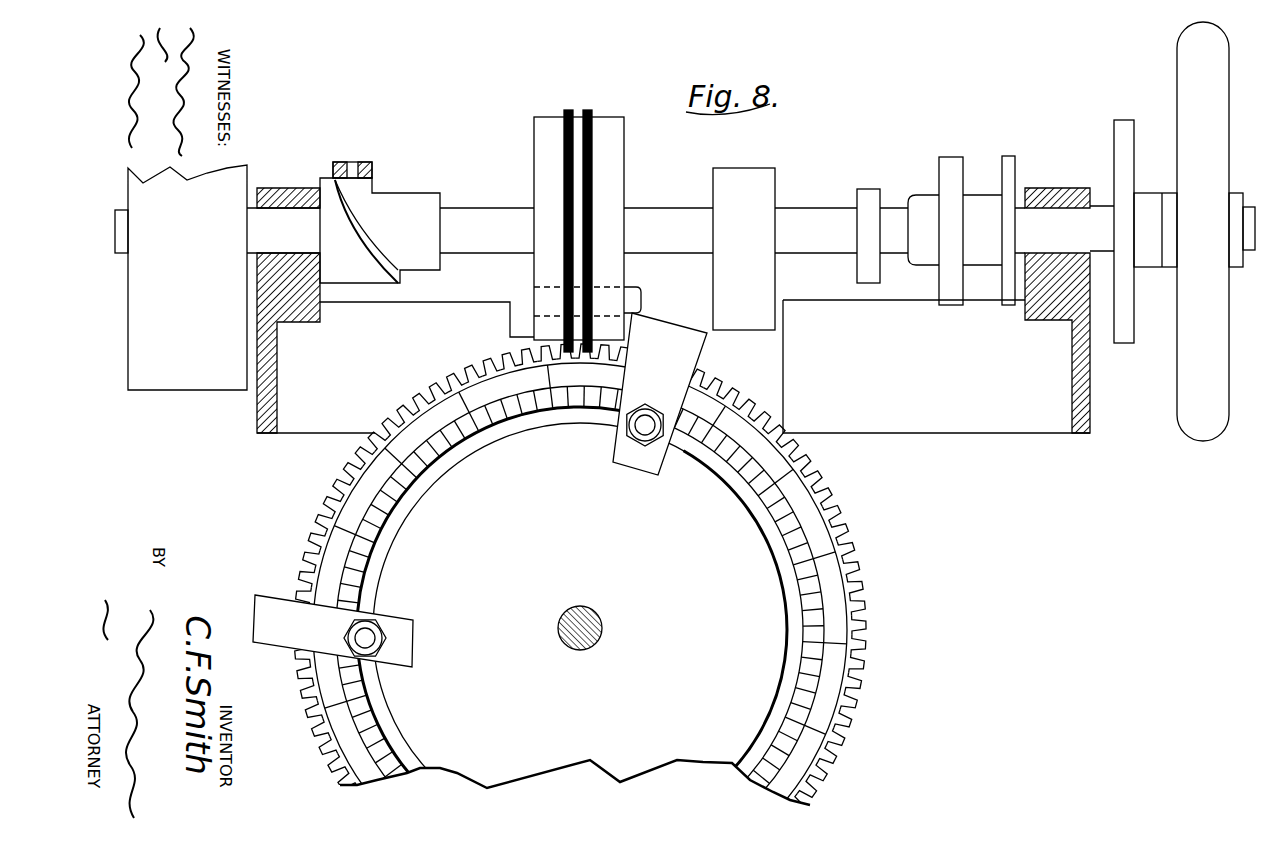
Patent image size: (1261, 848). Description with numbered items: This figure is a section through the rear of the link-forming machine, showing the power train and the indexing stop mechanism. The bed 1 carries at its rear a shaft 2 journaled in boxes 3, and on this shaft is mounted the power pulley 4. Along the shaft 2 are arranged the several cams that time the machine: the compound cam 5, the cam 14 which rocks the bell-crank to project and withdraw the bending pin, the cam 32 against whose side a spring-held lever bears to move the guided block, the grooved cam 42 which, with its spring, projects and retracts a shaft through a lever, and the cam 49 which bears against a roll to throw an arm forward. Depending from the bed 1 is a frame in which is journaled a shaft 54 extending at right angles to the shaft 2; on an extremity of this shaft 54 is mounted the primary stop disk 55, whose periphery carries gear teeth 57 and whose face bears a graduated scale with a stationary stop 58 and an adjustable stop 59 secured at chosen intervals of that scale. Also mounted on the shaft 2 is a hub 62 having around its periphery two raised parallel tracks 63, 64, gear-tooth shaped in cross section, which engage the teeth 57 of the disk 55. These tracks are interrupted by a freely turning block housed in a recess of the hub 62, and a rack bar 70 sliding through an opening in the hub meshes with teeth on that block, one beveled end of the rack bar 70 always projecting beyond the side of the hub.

The bed 1 is at (673, 366).
The shaft 2 is at (482, 214).
The boxes 3 is at (296, 197).
The power pulley 4 is at (187, 277).
The compound cam 5 is at (744, 249).
The cam 14 is at (868, 196).
The cam 32 is at (352, 226).
The cam 42 is at (961, 230).
The cam 49 is at (1135, 320).
The shaft 54 is at (603, 628).
The primary stop disk 55 is at (553, 427).
The gear teeth 57 is at (853, 548).
The stop 58 is at (660, 394).
The stop 59 is at (333, 631).
The hub 62 is at (556, 209).
The raised track 63 is at (566, 112).
The raised track 64 is at (589, 112).
The rack bar 70 is at (634, 292).